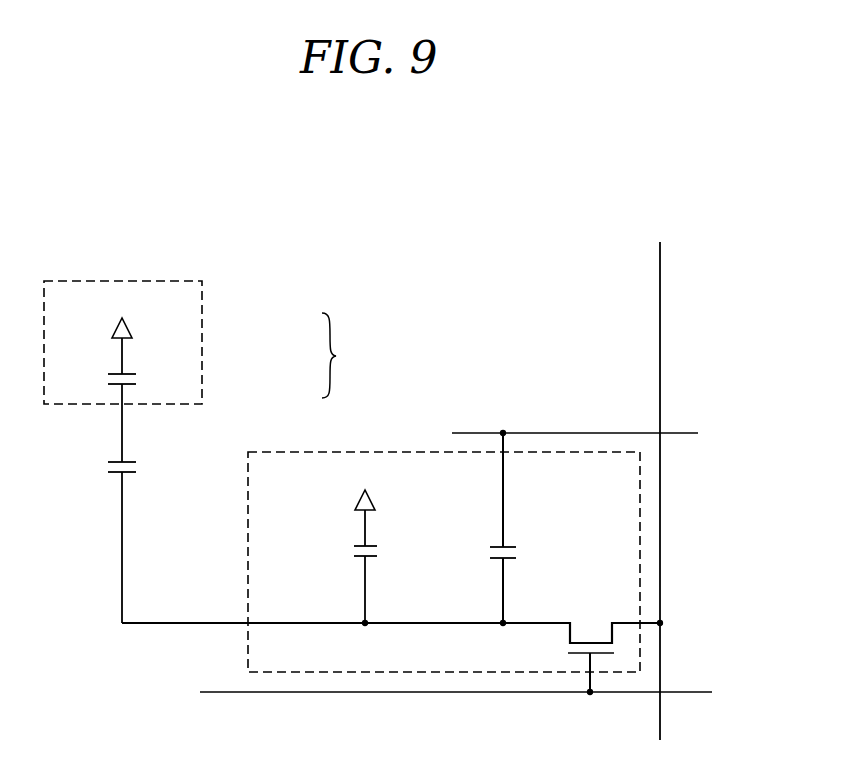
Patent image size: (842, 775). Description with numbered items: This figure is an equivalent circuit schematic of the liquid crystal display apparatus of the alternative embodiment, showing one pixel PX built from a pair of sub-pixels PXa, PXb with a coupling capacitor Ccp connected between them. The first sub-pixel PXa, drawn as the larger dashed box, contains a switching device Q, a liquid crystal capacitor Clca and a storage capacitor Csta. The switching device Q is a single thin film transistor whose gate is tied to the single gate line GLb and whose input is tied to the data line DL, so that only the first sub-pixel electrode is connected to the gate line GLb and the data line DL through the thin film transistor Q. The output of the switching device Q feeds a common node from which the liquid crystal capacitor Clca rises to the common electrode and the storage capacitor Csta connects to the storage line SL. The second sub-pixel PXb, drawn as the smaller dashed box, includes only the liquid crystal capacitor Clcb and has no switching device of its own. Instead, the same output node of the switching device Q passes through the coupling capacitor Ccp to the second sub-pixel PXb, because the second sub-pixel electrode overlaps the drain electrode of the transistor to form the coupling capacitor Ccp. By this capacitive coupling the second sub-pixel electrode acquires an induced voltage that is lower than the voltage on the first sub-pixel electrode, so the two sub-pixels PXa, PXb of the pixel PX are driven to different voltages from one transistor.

The second sub-pixel PXb is at (202, 328).
The first sub-pixel PXa is at (294, 450).
The pixel PX is at (346, 355).
The liquid crystal capacitor Clcb is at (146, 390).
The coupling capacitor Ccp is at (94, 540).
The liquid crystal capacitor Clca is at (335, 556).
The storage capacitor Csta is at (472, 527).
The storage line SL is at (593, 436).
The data line DL is at (662, 479).
The switching device Q is at (580, 668).
The gate line GLb is at (430, 691).